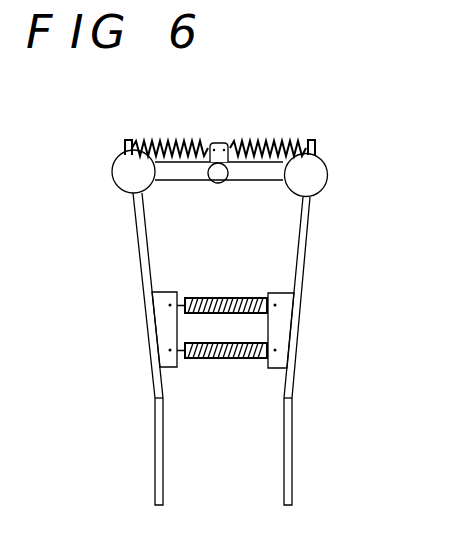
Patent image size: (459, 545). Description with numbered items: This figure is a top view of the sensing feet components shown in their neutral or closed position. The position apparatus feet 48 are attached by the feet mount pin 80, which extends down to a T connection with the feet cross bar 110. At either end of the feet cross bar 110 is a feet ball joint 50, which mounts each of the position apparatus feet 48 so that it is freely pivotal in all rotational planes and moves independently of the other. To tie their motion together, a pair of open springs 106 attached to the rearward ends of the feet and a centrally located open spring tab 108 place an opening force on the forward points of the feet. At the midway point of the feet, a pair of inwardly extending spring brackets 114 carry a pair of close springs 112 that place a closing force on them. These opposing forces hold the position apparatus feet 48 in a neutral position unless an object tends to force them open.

The position apparatus feet 48 is at (138, 265).
The feet ball joint 50 is at (115, 187).
The feet mount pin 80 is at (217, 183).
The open springs 106 is at (205, 143).
The open spring tab 108 is at (192, 145).
The feet cross bar 110 is at (258, 181).
The close springs 112 is at (222, 313).
The spring brackets 114 is at (163, 322).